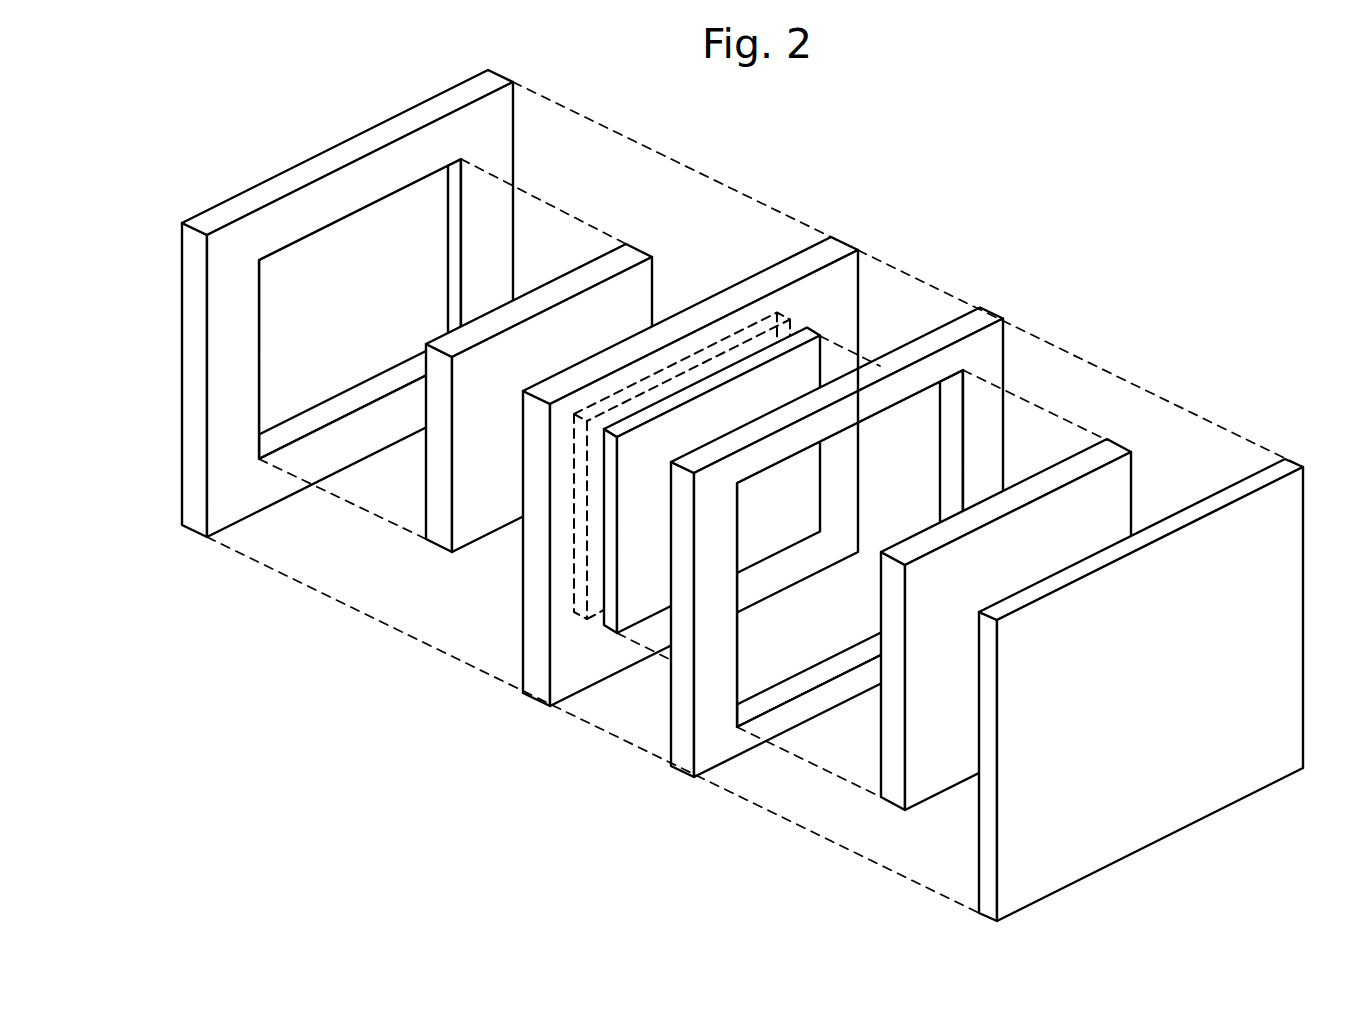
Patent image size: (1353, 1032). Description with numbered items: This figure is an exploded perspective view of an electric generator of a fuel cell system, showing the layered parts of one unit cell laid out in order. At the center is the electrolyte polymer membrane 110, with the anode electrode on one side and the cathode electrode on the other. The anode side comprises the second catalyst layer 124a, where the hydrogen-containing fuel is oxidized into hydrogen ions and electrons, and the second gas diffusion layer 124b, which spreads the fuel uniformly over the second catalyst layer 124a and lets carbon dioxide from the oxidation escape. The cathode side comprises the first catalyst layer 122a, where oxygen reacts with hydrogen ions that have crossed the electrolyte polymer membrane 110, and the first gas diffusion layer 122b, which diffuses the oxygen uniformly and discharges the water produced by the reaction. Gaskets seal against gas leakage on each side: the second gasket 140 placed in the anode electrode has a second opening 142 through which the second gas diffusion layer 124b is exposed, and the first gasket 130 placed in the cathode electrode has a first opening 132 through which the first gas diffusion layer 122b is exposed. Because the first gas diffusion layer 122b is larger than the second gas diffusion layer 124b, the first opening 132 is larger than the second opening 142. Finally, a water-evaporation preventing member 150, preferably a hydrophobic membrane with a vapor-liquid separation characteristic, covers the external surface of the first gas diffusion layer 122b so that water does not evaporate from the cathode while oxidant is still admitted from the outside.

The electrolyte polymer membrane 110 is at (836, 246).
The first catalyst layer 122a is at (809, 333).
The first gas diffusion layer 122b is at (1106, 444).
The second catalyst layer 124a is at (576, 573).
The second gas diffusion layer 124b is at (633, 248).
The first gasket 130 is at (827, 533).
The first opening 132 is at (800, 638).
The second gasket 140 is at (347, 303).
The second opening 142 is at (321, 358).
The water-evaporation preventing member 150 is at (1285, 464).